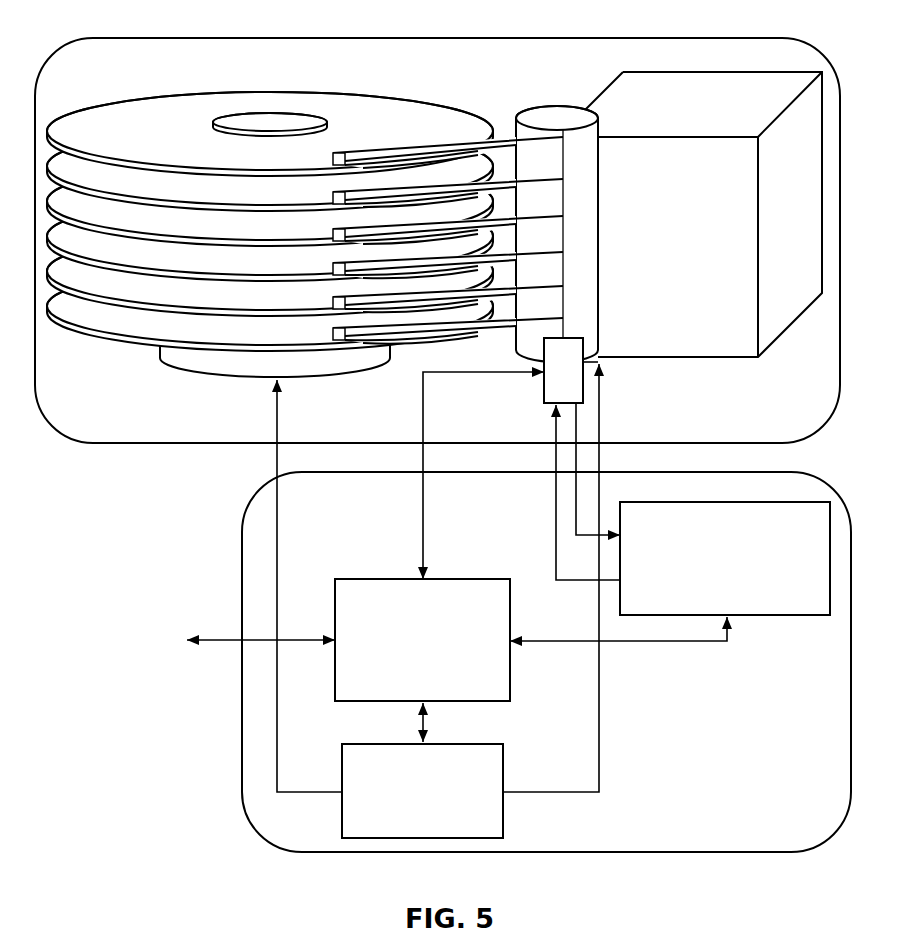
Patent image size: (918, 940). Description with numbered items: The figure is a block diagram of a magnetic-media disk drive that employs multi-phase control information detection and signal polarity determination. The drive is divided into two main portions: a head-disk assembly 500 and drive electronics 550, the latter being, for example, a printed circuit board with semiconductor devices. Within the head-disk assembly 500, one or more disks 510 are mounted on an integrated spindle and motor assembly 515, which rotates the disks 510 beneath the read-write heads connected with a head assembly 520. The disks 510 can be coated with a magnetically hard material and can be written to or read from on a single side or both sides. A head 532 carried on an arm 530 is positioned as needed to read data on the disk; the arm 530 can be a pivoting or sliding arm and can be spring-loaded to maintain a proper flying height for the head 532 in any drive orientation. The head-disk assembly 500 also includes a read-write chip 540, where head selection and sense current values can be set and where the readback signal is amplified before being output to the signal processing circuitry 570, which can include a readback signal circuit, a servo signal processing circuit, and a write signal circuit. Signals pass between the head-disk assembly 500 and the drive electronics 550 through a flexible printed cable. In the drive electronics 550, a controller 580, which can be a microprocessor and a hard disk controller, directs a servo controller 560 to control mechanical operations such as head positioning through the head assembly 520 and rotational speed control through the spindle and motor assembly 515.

The head-disk assembly 500 is at (437, 240).
The disks 510 is at (160, 83).
The spindle and motor assembly 515 is at (220, 377).
The head assembly 520 is at (578, 92).
The arm 530 is at (438, 138).
The head 532 is at (340, 150).
The read-write chip 540 is at (543, 392).
The drive electronics 550 is at (546, 662).
The servo controller 560 is at (480, 742).
The signal processing circuitry 570 is at (735, 618).
The controller 580 is at (437, 578).